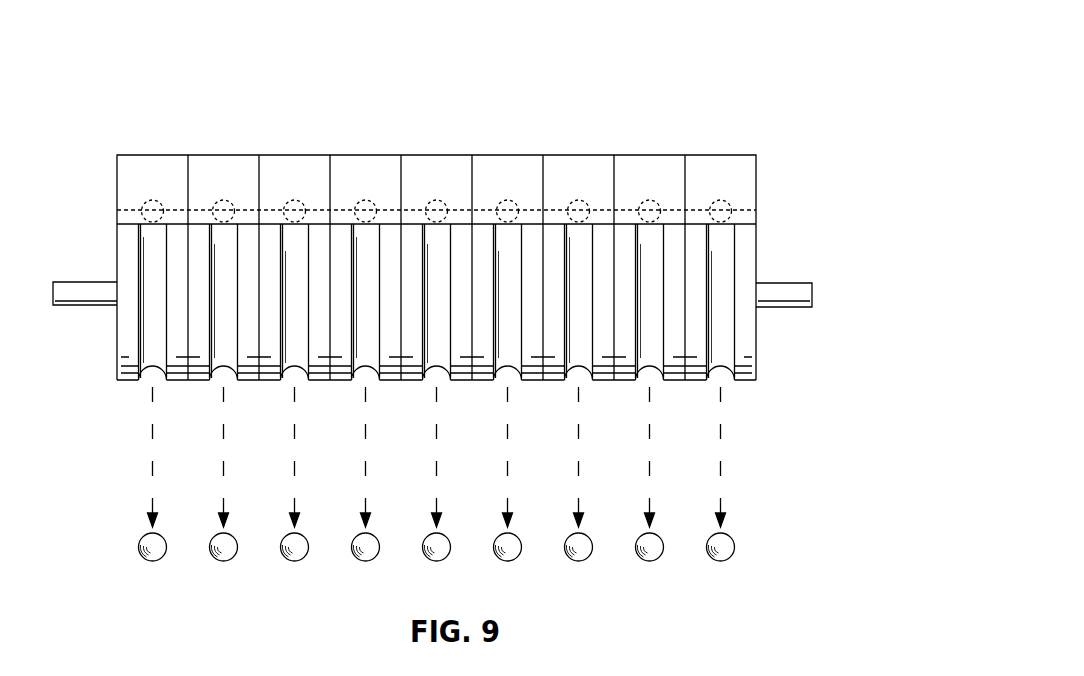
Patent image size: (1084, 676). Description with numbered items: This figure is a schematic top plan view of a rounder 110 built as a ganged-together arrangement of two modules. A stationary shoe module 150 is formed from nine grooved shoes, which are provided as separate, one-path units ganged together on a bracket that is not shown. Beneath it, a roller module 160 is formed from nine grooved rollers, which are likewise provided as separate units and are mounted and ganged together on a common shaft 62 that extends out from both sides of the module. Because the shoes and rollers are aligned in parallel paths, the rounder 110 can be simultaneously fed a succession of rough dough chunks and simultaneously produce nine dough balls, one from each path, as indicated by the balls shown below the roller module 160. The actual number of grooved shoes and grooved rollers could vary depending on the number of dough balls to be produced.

The rounder 110 is at (700, 78).
The stationary shoe module 150 is at (122, 150).
The roller module 160 is at (121, 394).
The common shaft 62 is at (60, 307).